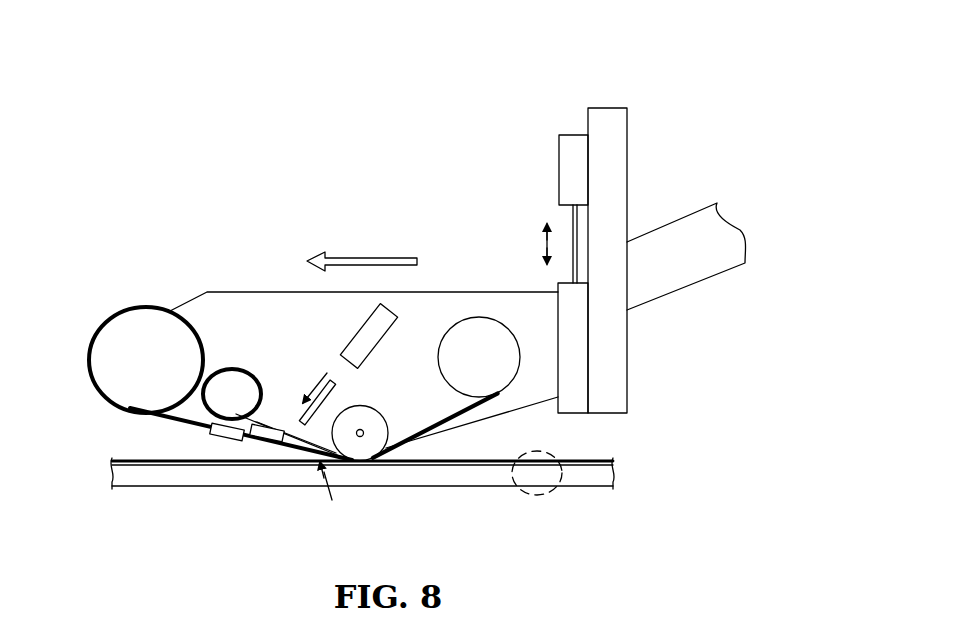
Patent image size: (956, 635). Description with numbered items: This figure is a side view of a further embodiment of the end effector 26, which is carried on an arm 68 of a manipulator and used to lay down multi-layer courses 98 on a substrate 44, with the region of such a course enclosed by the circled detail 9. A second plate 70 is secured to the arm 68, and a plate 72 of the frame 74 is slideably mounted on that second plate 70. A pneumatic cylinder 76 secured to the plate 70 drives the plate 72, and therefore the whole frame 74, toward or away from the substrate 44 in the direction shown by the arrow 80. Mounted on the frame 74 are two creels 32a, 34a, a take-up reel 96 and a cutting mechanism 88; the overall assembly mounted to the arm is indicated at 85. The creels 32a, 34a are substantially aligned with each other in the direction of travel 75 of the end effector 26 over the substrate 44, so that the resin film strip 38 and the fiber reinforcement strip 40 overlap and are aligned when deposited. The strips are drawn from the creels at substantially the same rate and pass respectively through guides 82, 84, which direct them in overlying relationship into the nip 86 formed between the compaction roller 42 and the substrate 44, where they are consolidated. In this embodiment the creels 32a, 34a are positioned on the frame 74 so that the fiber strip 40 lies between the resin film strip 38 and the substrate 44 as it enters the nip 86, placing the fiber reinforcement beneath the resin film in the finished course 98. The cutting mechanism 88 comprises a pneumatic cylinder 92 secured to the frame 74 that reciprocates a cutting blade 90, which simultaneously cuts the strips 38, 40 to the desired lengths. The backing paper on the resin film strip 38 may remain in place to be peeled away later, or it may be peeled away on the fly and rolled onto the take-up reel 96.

The media transport module 85 is at (560, 100).
The end effector 26 is at (430, 194).
The second plate 70 is at (607, 132).
The pneumatic cylinder 76 is at (573, 160).
The arrow 80 is at (541, 245).
The arm 68 is at (695, 265).
The plate 72 is at (570, 389).
The direction of travel 75 is at (370, 258).
The cutting mechanism 88 is at (326, 348).
The frame 74 is at (207, 317).
The pneumatic cylinder 92 is at (381, 337).
The take-up reel 96 is at (481, 357).
The cutting blade 90 is at (350, 397).
The guide 82 is at (268, 430).
The creel 34a is at (117, 368).
The creel 32a is at (231, 392).
The fiber reinforcement strip 40 is at (162, 415).
The compaction roller 42 is at (372, 428).
The resin film strip 38 is at (287, 449).
The nip 86 is at (332, 500).
The guide 84 is at (219, 439).
The substrate 44 is at (173, 476).
The multi-layer course 98 is at (590, 460).
The detail region 9 is at (552, 490).